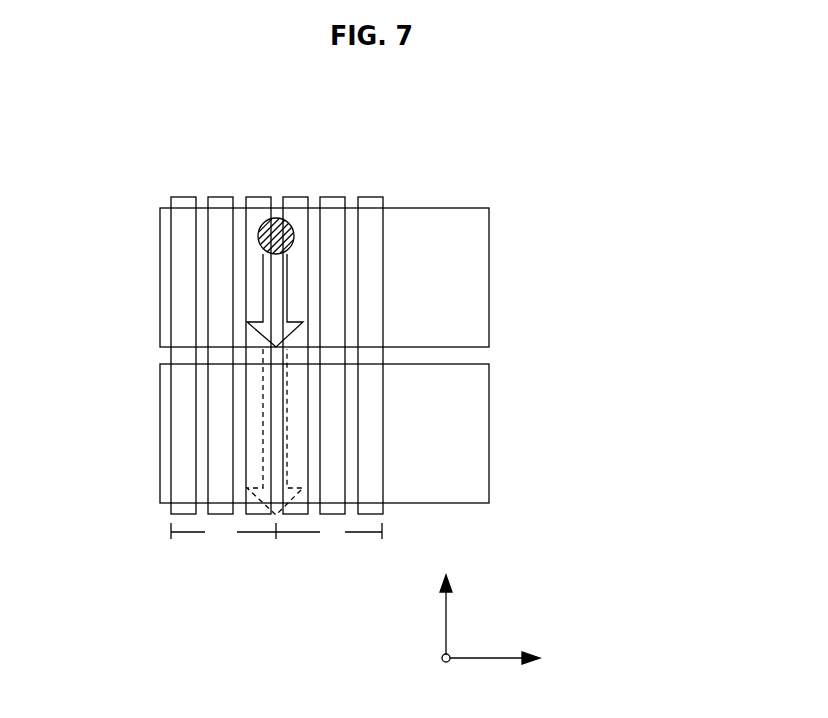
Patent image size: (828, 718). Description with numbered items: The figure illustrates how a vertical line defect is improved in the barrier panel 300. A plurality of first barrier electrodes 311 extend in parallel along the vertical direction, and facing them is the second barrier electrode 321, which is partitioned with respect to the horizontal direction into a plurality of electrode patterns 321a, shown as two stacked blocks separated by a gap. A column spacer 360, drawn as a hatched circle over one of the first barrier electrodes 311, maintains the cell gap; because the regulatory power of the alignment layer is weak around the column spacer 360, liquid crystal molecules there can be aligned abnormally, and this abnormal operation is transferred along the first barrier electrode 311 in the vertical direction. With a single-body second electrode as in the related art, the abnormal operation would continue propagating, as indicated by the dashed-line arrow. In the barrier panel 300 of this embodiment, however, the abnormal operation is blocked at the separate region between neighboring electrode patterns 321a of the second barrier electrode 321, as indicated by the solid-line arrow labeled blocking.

The barrier panel 300 is at (293, 620).
The first barrier electrode 311 is at (185, 458).
The second barrier electrode 321 is at (416, 355).
The electrode pattern 321a is at (603, 433).
The column spacer 360 is at (275, 208).